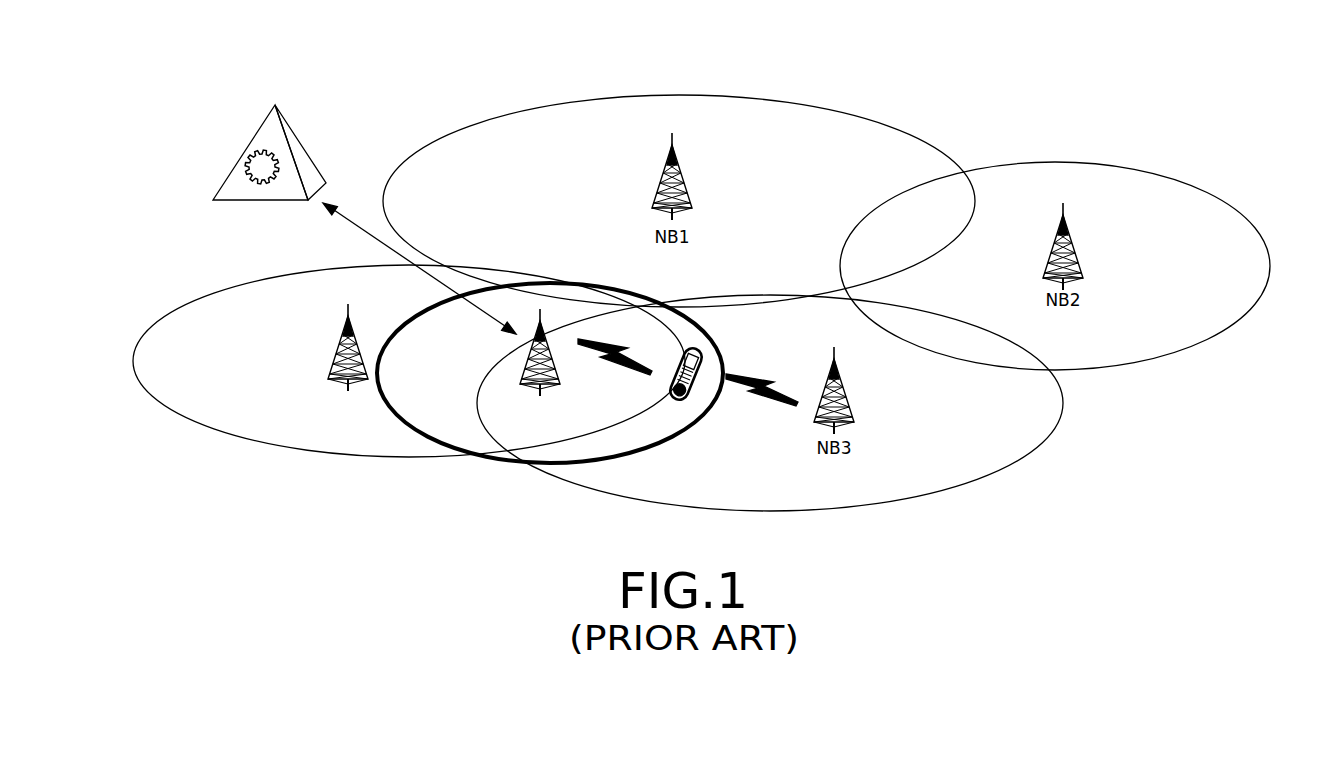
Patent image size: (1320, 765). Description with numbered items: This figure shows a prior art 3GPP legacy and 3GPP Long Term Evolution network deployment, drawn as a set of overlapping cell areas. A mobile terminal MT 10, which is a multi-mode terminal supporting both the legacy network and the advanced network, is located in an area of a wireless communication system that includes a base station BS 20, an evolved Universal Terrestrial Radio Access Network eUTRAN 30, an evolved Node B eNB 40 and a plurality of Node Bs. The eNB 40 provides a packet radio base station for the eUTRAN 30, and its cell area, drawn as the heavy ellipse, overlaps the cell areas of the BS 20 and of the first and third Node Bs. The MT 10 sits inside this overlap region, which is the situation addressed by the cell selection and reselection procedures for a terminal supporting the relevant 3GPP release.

The MT 10 is at (697, 386).
The Base Station 20 is at (337, 352).
The evolved Universal Terrestrial Radio Access Network 30 is at (305, 136).
The evolved Node B 40 is at (527, 368).